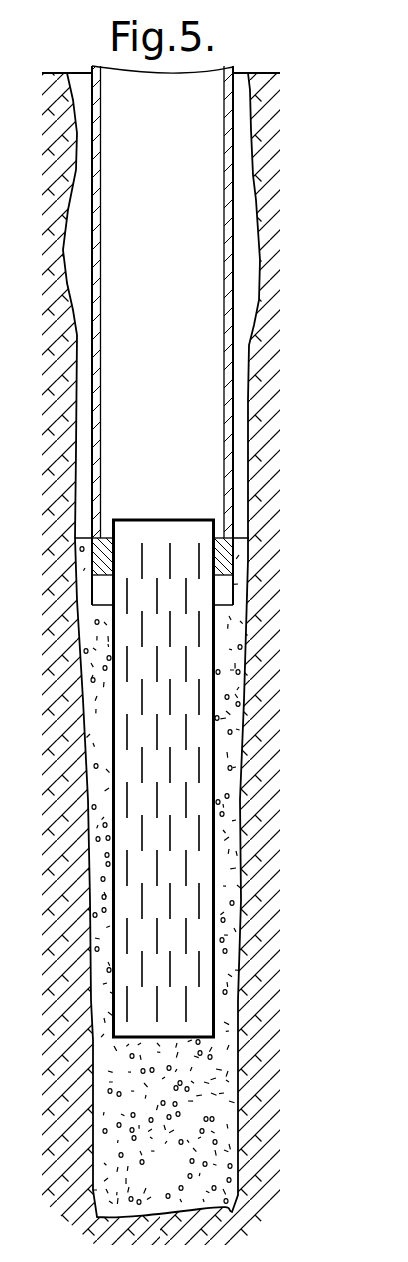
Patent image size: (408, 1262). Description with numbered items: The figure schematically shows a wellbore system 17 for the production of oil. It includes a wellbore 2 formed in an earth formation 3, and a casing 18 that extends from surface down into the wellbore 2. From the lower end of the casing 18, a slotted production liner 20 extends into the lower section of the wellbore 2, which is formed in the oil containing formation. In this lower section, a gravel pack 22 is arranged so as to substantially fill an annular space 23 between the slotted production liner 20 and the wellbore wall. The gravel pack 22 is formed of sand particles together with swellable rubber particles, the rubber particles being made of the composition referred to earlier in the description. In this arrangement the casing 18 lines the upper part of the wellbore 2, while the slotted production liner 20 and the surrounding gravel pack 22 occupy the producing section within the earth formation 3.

The wellbore 2 is at (250, 467).
The earth formation 3 is at (277, 640).
The wellbore system 17 is at (251, 352).
The casing 18 is at (233, 195).
The slotted production liner 20 is at (214, 848).
The gravel pack 22 is at (222, 972).
The annular space 23 is at (228, 912).